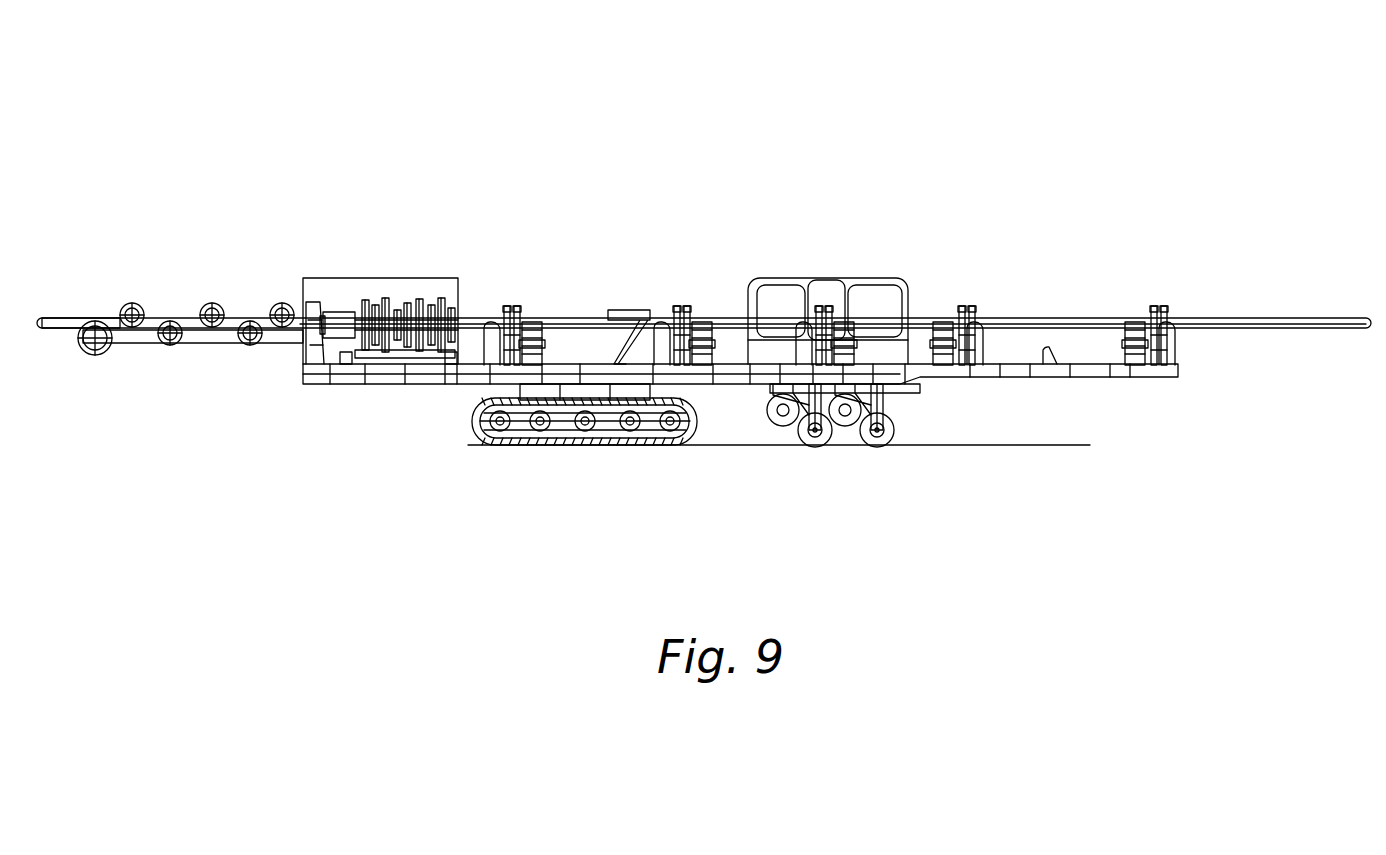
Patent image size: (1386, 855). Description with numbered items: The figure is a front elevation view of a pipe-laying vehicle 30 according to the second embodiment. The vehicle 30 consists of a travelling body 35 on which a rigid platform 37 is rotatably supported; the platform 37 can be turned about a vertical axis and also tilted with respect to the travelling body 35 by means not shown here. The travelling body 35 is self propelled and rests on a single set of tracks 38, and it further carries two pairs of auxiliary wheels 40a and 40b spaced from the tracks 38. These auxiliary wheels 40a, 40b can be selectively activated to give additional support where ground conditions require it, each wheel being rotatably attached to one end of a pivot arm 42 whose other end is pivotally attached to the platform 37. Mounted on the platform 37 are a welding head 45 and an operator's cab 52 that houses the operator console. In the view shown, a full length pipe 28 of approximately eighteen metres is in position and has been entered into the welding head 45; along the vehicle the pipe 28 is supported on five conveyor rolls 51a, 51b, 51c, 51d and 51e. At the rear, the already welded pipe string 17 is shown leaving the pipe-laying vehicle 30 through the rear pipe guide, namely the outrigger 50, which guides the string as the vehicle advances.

The pipe string 17 is at (70, 320).
The full length pipe 28 is at (1298, 323).
The pipe-laying vehicle 30 is at (1117, 128).
The travelling body 35 is at (446, 421).
The rigid platform 37 is at (708, 368).
The tracks 38 is at (532, 446).
The auxiliary wheels 40a is at (807, 440).
The auxiliary wheels 40b is at (890, 447).
The pivot arm 42 is at (880, 397).
The welding head 45 is at (392, 292).
The outrigger 50 is at (214, 333).
The conveyor roll 51a is at (498, 310).
The conveyor roll 51b is at (662, 310).
The conveyor roll 51c is at (813, 310).
The conveyor roll 51d is at (975, 315).
The conveyor roll 51e is at (1175, 315).
The operator's cab 52 is at (878, 297).